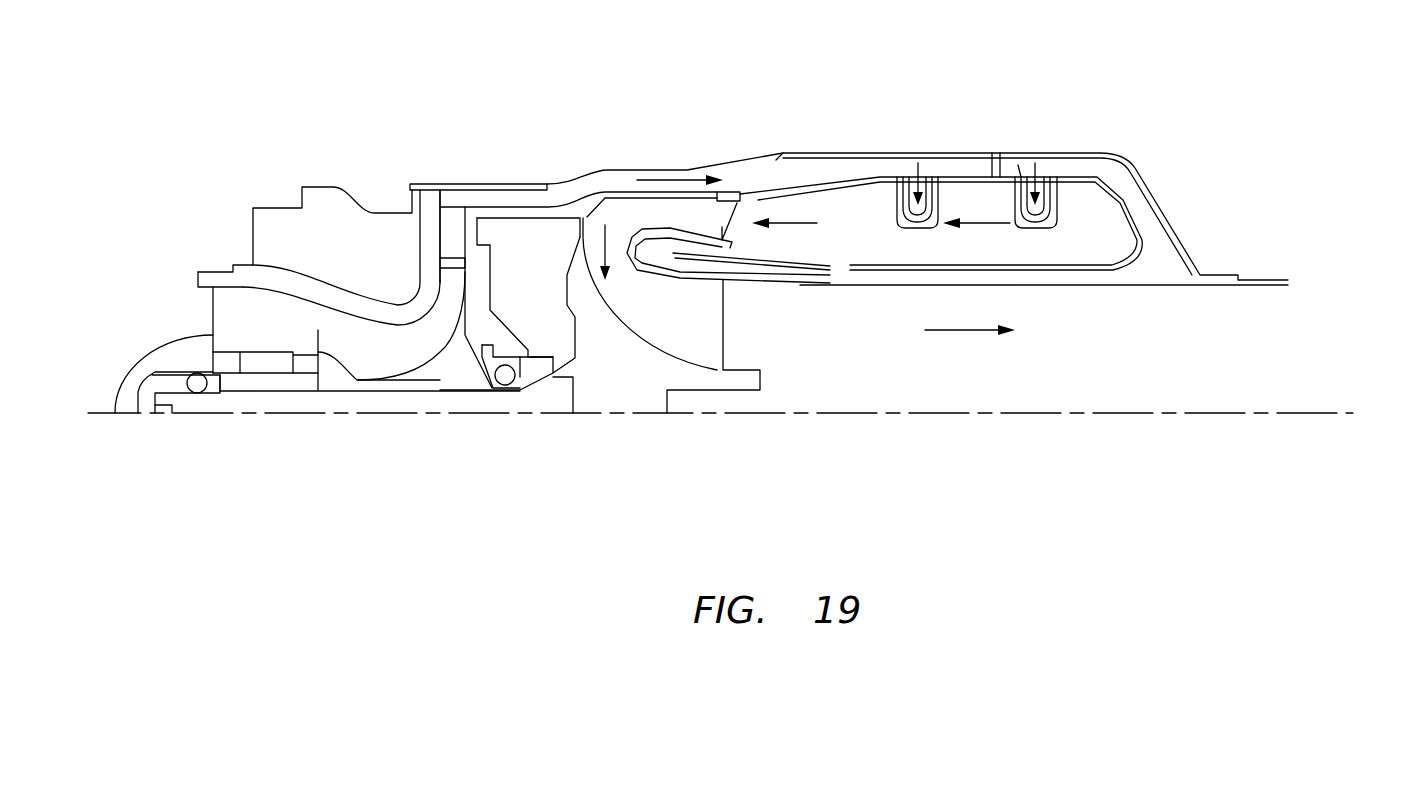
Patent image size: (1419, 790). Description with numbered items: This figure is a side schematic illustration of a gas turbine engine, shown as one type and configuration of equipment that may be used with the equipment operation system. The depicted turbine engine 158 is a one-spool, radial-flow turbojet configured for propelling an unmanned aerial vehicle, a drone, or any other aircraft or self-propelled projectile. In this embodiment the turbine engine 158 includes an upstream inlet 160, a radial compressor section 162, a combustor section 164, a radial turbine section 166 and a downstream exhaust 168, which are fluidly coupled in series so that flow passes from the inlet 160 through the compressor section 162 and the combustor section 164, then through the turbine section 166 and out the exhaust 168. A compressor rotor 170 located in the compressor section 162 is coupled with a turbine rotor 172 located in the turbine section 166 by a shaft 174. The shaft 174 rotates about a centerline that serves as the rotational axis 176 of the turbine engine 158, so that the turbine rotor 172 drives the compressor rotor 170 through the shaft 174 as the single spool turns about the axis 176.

The turbine engine 158 is at (1180, 119).
The upstream inlet 160 is at (208, 310).
The compressor section 162 is at (423, 440).
The combustor section 164 is at (912, 130).
The turbine section 166 is at (665, 445).
The downstream exhaust 168 is at (1310, 345).
The compressor rotor 170 is at (437, 380).
The turbine rotor 172 is at (697, 380).
The shaft 174 is at (347, 405).
The rotational axis 176 is at (1335, 417).